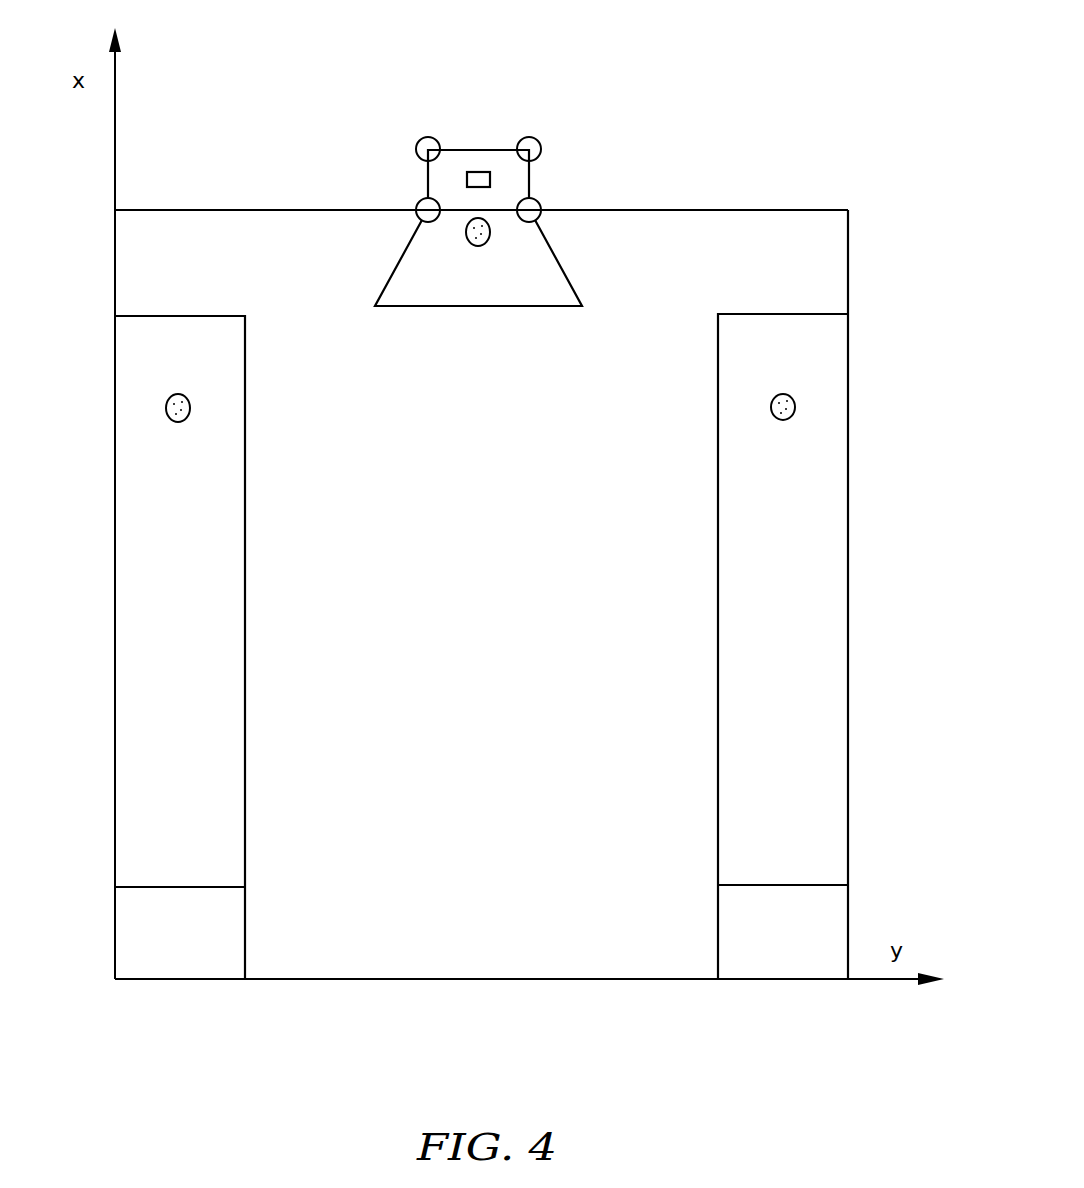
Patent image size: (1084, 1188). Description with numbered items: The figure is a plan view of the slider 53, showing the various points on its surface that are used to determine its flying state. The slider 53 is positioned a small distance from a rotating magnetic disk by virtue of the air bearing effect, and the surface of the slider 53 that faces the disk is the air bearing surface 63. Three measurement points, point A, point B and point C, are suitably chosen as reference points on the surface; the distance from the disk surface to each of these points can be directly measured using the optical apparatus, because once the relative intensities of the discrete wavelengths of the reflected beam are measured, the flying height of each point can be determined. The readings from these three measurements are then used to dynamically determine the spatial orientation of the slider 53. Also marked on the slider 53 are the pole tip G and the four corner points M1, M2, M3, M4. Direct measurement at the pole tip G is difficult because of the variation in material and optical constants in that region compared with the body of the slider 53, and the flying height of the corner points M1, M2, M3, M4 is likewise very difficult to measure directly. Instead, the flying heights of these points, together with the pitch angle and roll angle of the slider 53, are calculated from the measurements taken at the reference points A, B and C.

The slider 53 is at (481, 594).
The air bearing surface 63 is at (555, 293).
The pole tip G is at (478, 178).
The corner point M1 is at (416, 152).
The corner point M2 is at (541, 148).
The corner point M3 is at (417, 215).
The corner point M4 is at (541, 216).
The reference point A is at (186, 420).
The reference point B is at (770, 412).
The reference point C is at (470, 245).